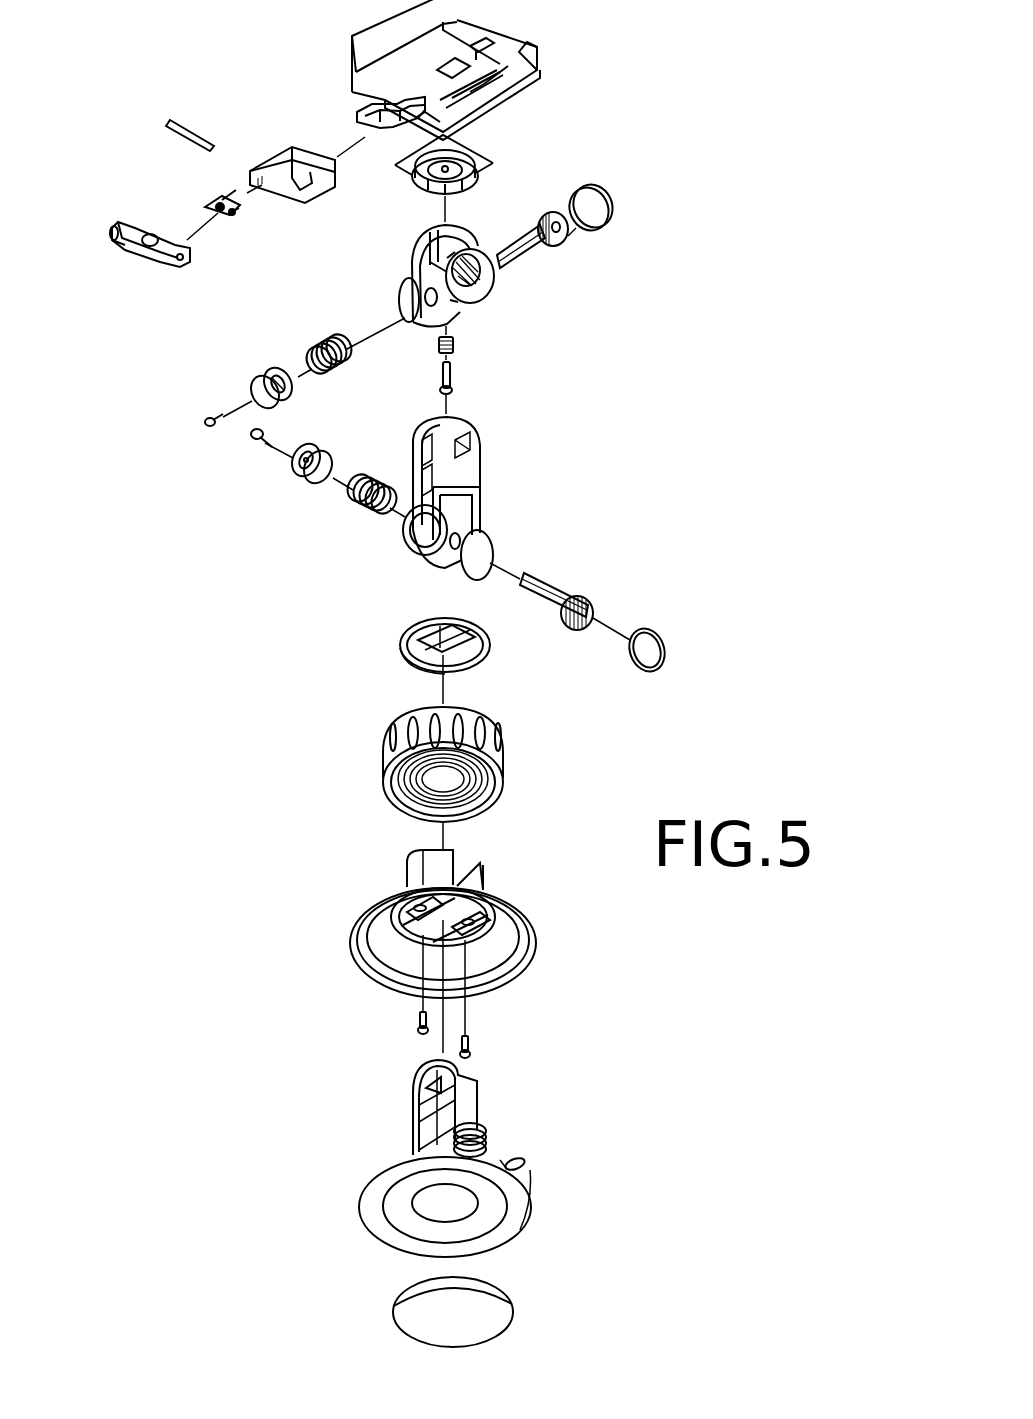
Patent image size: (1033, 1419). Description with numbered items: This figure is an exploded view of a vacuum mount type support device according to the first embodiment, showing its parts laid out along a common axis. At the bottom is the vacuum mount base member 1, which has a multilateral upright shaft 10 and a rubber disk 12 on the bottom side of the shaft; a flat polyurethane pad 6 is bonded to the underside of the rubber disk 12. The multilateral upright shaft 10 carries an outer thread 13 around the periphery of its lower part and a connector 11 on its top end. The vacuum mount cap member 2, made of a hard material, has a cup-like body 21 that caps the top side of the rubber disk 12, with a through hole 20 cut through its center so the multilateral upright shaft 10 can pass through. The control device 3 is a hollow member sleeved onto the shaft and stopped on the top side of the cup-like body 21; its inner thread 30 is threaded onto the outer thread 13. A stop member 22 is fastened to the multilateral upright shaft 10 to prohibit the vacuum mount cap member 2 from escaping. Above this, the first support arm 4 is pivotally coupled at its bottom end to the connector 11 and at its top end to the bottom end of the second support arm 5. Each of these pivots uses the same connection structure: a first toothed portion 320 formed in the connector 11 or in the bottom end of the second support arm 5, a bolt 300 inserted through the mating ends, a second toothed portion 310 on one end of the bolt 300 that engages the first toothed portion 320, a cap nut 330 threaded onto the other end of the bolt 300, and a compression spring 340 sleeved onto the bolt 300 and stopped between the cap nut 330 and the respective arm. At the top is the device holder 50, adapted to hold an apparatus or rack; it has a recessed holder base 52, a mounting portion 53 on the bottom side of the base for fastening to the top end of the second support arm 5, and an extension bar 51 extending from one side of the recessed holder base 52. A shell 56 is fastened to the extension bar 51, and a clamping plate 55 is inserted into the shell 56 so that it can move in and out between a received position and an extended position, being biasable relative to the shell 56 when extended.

The vacuum mount base member 1 is at (434, 1095).
The vacuum mount cap member 2 is at (405, 882).
The control device 3 is at (491, 782).
The first support arm 4 is at (458, 467).
The second support arm 5 is at (427, 254).
The flat polyurethane pad 6 is at (490, 1313).
The multilateral upright shaft 10 is at (415, 1112).
The connector 11 is at (437, 1088).
The rubber disk 12 is at (363, 1197).
The outer thread 13 is at (486, 1140).
The through hole 20 is at (452, 910).
The cup-like body 21 is at (432, 953).
The stop member 22 is at (403, 638).
The inner thread 30 is at (487, 783).
The device holder 50 is at (507, 76).
The extension bar 51 is at (368, 112).
The recessed holder base 52 is at (350, 80).
The mounting portion 53 is at (460, 93).
The clamping plate 55 is at (125, 227).
The shell 56 is at (246, 229).
The bolt 300 is at (520, 253).
The second toothed portion 310 is at (559, 241).
The first toothed portion 320 is at (472, 273).
The cap nut 330 is at (270, 388).
The compression spring 340 is at (340, 367).